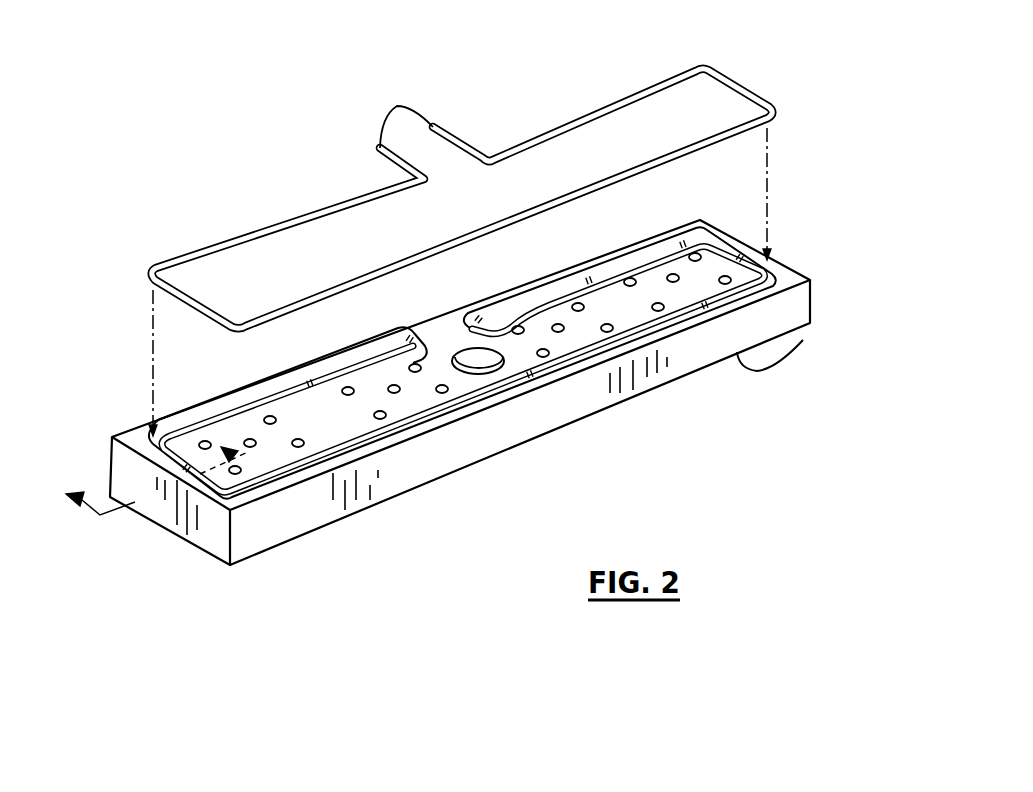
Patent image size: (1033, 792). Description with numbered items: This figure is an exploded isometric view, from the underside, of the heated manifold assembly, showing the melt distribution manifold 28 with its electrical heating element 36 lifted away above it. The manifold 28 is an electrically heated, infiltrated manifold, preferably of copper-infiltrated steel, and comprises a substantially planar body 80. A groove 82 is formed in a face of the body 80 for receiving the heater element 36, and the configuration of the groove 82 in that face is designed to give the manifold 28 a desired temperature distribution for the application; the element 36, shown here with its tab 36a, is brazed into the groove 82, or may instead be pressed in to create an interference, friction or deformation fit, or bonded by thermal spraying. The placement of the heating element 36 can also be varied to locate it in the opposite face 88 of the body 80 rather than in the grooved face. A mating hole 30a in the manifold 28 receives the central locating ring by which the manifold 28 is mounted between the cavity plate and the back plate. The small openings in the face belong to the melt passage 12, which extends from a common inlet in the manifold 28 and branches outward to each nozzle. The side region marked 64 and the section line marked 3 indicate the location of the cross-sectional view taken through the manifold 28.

The melt passage 12 is at (255, 448).
The melt distribution manifold 28 is at (117, 463).
The mating hole 30a is at (463, 350).
The electrical heating element 36 is at (740, 88).
The gasket tab 36a is at (397, 106).
The side face 64 is at (810, 283).
The body 80 is at (793, 277).
The groove 82 is at (327, 362).
The opposite face 88 is at (803, 340).
The section line 3- 3 is at (408, 321).